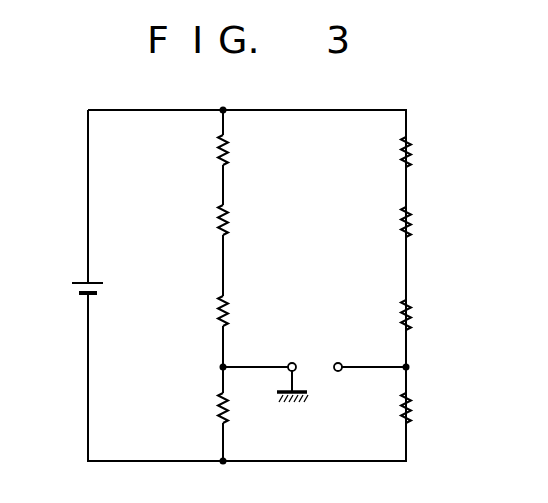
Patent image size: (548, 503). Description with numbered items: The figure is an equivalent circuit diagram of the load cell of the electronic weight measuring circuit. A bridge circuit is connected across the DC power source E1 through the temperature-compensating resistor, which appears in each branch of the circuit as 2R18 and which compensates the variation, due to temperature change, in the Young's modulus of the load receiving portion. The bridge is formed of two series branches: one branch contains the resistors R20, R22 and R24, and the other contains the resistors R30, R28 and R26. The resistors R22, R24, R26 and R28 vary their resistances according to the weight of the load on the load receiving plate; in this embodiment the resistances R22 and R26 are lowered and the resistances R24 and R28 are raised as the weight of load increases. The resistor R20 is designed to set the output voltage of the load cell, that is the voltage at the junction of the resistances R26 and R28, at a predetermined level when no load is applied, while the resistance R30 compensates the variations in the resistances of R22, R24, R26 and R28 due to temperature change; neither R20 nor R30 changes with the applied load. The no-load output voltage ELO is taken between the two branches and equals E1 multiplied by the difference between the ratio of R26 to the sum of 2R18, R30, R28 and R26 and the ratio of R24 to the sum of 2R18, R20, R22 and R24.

The resistor 2R18 is at (229, 152).
The resistor R20 is at (229, 222).
The resistor R22 is at (229, 312).
The resistor R24 is at (229, 409).
The resistor R26 is at (412, 409).
The resistor R28 is at (412, 316).
The resistor R30 is at (412, 224).
The DC power source E1 is at (69, 290).
The no-load output voltage ELO is at (338, 363).